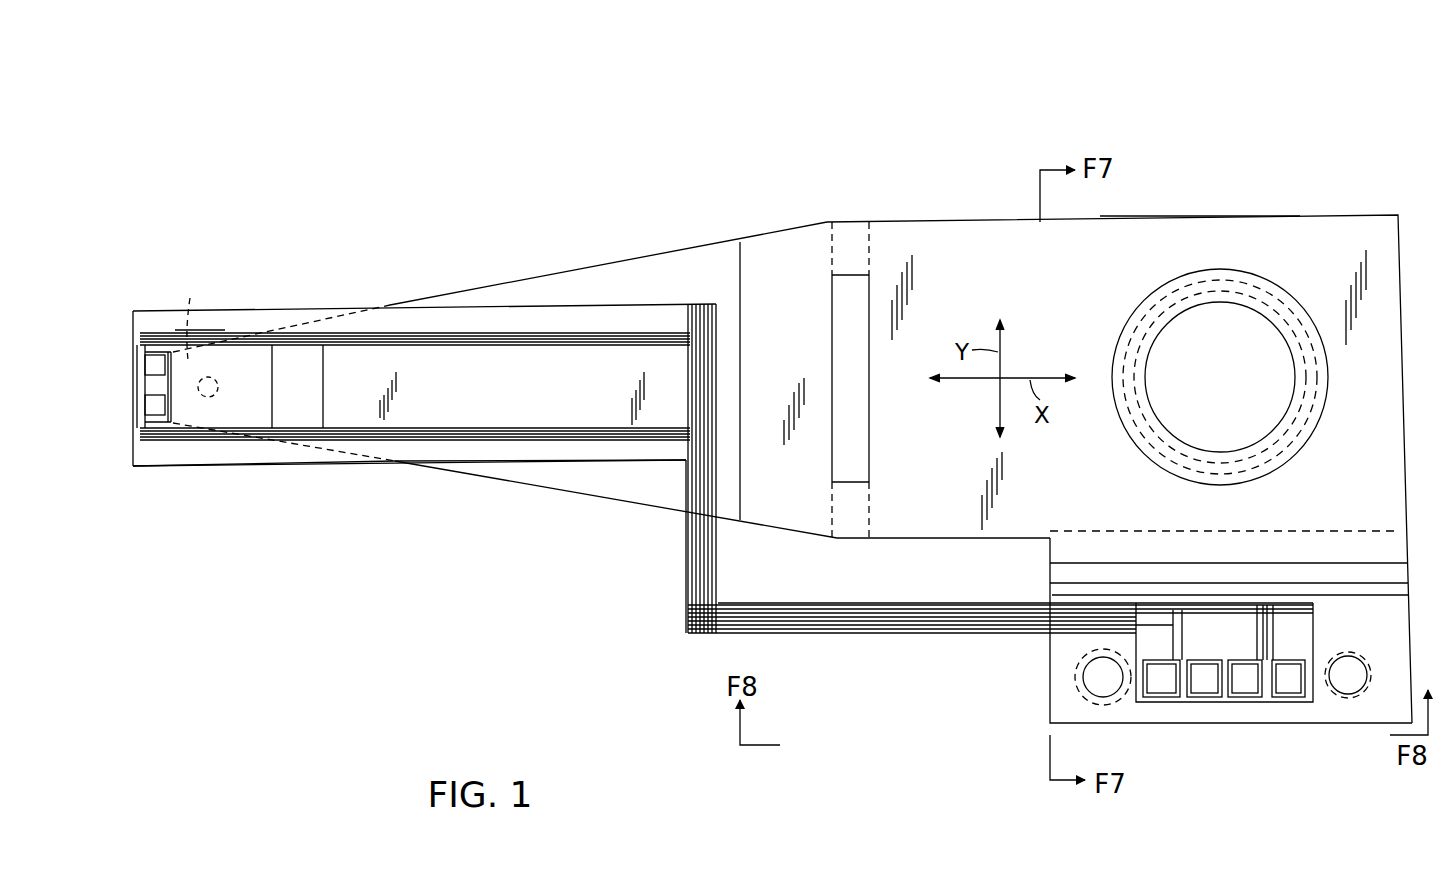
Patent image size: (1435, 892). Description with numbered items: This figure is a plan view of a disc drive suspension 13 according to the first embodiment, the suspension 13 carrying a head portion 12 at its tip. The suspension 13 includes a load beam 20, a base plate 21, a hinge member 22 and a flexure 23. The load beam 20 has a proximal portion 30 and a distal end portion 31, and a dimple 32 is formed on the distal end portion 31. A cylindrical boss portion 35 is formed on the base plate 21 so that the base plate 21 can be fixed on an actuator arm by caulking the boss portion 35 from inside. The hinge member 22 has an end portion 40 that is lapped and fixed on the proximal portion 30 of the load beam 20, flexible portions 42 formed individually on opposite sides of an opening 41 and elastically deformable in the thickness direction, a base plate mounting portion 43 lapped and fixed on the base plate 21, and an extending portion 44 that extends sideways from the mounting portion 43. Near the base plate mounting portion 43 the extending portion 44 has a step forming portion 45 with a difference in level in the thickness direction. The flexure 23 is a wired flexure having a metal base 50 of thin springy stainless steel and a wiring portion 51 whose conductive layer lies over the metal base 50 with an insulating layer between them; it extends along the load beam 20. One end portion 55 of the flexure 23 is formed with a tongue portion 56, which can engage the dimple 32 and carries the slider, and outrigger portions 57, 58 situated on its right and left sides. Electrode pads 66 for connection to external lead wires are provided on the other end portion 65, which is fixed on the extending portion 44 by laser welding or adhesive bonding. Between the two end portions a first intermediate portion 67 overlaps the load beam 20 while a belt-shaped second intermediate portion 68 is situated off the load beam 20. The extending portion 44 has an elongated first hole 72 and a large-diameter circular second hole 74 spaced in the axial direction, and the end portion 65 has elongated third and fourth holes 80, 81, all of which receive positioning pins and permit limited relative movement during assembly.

The head portion 12 is at (202, 470).
The suspension 13 is at (617, 192).
The load beam 20 is at (565, 305).
The base plate 21 is at (1182, 215).
The hinge member 22 is at (930, 222).
The flexure 23 is at (843, 637).
The proximal portion 30 is at (785, 236).
The distal end portion 31 is at (189, 316).
The dimple 32 is at (218, 385).
The boss portion 35 is at (1155, 347).
The end portion 40 is at (783, 520).
The opening 41 is at (840, 333).
The flexible portions 42 is at (853, 235).
The base plate mounting portion 43 is at (1275, 218).
The extending portion 44 is at (1050, 685).
The step forming portion 45 is at (1050, 572).
The metal base 50 is at (577, 455).
The wiring portion 51 is at (477, 335).
The one end portion 55 is at (132, 385).
The tongue portion 56 is at (272, 400).
The outrigger portion 57 is at (253, 318).
The outrigger portion 58 is at (250, 468).
The other end portion 65 is at (1275, 705).
The electrode pads 66 is at (1245, 685).
The first intermediate portion 67 is at (512, 462).
The second intermediate portion 68 is at (922, 607).
The first hole 72 is at (1352, 694).
The second hole 74 is at (1130, 702).
The third hole 80 is at (1335, 688).
The fourth hole 81 is at (1098, 692).